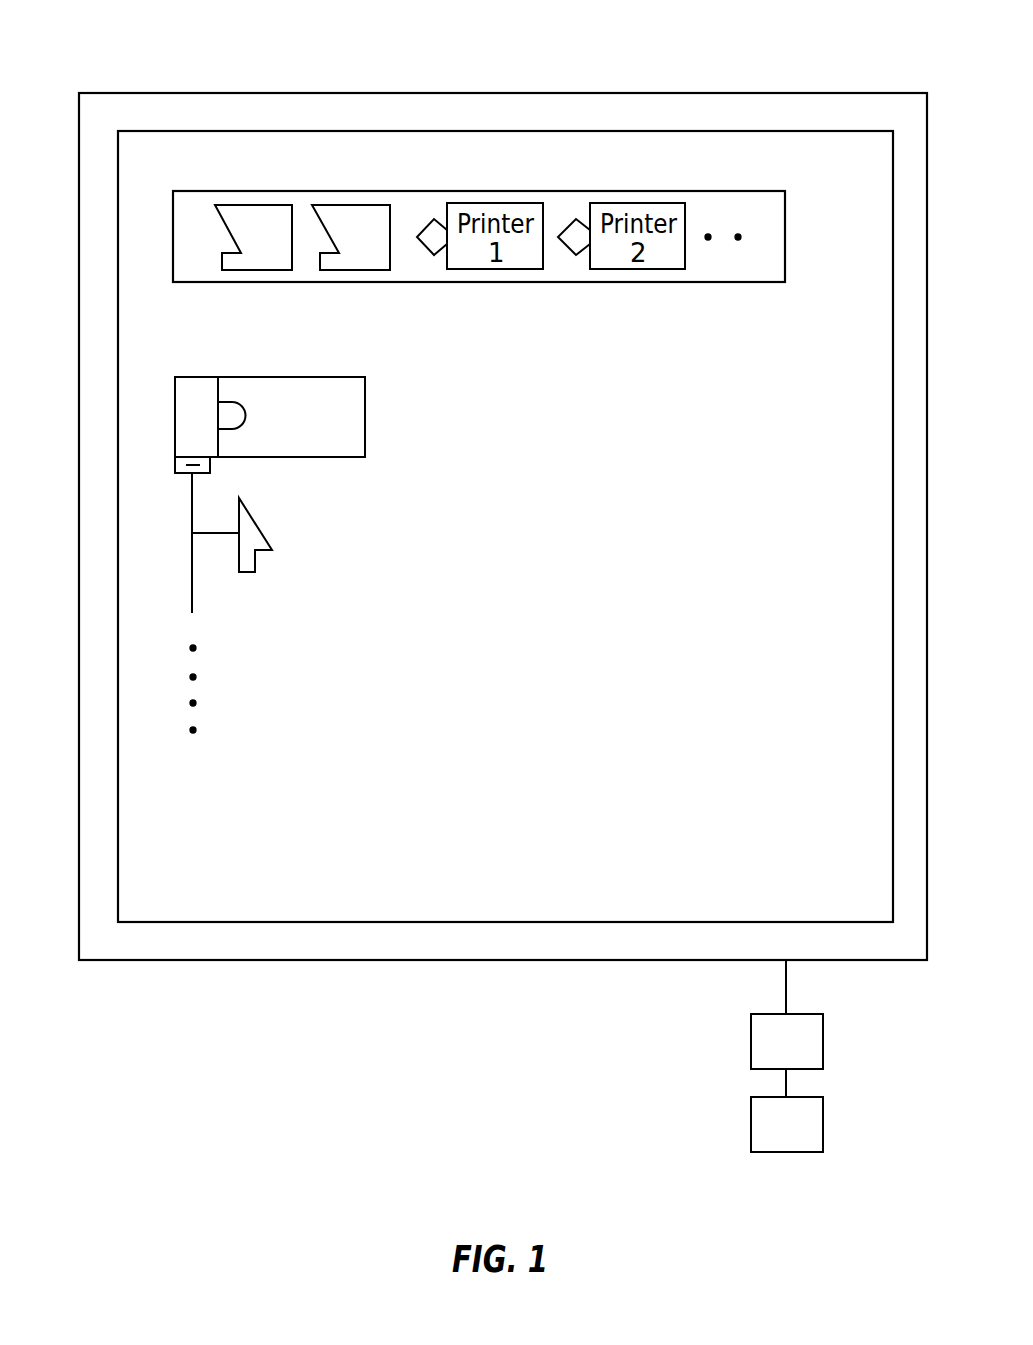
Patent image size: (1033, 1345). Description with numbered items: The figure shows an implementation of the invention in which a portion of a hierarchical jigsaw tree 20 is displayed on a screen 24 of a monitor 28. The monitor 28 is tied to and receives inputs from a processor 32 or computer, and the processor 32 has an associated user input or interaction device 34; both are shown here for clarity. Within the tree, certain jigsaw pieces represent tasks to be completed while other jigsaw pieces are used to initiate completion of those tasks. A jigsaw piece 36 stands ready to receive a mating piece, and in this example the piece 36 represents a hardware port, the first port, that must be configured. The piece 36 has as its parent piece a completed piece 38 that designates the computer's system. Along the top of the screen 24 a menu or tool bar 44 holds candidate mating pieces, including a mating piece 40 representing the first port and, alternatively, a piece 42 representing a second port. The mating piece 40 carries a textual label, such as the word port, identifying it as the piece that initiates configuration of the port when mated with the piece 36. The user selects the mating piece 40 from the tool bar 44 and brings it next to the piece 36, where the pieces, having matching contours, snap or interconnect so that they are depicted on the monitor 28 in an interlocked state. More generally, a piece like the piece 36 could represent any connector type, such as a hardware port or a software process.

The hierarchical jigsaw tree 20 is at (440, 563).
The screen 24 is at (229, 896).
The monitor 28 is at (427, 938).
The processor 32 is at (823, 1033).
The user input or interaction device 34 is at (823, 1125).
The jigsaw piece 36 is at (248, 573).
The completed piece 38 is at (265, 377).
The mating piece 40 is at (236, 203).
The piece representing a second port 42 is at (349, 203).
The tool bar 44 is at (500, 190).